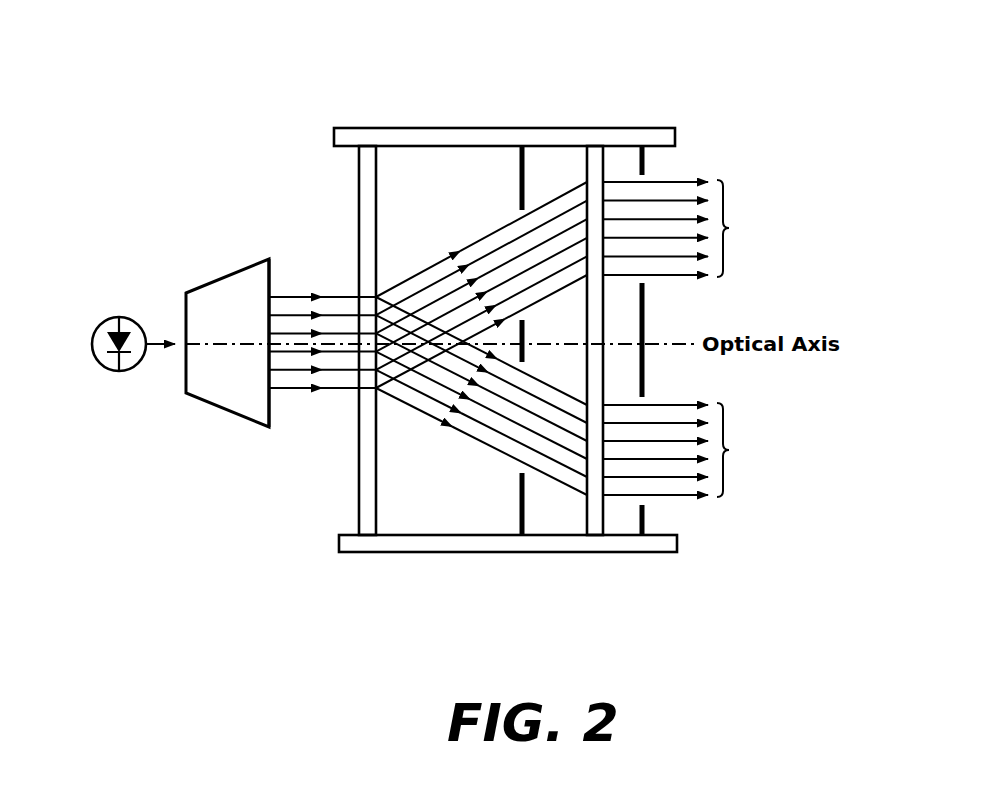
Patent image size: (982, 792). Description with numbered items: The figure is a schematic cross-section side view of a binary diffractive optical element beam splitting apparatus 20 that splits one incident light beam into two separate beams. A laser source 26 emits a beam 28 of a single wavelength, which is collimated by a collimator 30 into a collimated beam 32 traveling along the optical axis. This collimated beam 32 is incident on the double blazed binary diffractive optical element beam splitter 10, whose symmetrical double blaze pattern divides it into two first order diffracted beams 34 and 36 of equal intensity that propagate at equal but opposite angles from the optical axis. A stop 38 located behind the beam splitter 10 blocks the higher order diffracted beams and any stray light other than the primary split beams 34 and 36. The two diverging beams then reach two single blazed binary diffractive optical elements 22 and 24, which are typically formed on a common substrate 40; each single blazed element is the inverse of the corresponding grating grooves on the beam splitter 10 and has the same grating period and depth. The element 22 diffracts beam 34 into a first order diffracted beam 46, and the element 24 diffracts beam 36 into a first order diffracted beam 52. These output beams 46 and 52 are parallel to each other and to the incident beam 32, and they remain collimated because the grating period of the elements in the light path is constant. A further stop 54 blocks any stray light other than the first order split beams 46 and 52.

The double blazed binary diffractive optical element beam splitter 10 is at (359, 492).
The beam splitting apparatus 20 is at (506, 76).
The single blazed binary diffractive optical element 22 is at (603, 158).
The single blazed binary diffractive optical element 24 is at (605, 518).
The laser source 26 is at (100, 318).
The beam 28 is at (228, 272).
The collimator 30 is at (272, 418).
The collimated beam 32 is at (305, 295).
The first order diffracted beam 34 is at (490, 235).
The first order diffracted beam 36 is at (490, 450).
The stop 38 is at (521, 505).
The common substrate 40 is at (593, 510).
The first order diffracted beam 46 is at (683, 228).
The first order diffracted beam 52 is at (685, 450).
The stop 54 is at (646, 298).